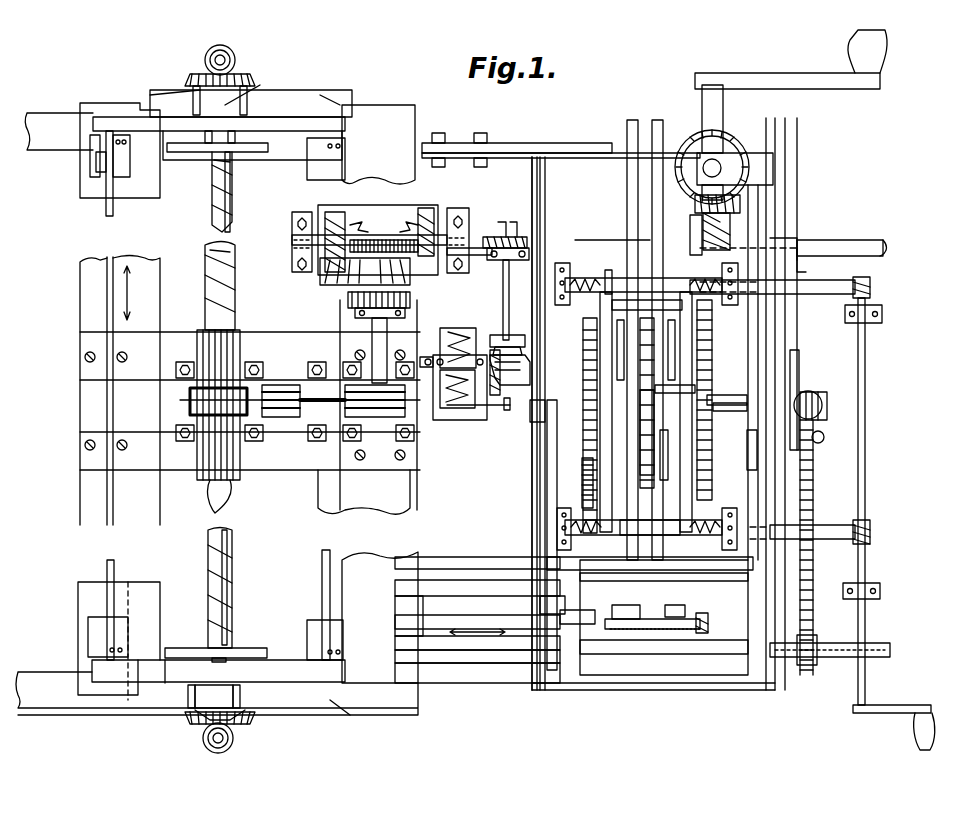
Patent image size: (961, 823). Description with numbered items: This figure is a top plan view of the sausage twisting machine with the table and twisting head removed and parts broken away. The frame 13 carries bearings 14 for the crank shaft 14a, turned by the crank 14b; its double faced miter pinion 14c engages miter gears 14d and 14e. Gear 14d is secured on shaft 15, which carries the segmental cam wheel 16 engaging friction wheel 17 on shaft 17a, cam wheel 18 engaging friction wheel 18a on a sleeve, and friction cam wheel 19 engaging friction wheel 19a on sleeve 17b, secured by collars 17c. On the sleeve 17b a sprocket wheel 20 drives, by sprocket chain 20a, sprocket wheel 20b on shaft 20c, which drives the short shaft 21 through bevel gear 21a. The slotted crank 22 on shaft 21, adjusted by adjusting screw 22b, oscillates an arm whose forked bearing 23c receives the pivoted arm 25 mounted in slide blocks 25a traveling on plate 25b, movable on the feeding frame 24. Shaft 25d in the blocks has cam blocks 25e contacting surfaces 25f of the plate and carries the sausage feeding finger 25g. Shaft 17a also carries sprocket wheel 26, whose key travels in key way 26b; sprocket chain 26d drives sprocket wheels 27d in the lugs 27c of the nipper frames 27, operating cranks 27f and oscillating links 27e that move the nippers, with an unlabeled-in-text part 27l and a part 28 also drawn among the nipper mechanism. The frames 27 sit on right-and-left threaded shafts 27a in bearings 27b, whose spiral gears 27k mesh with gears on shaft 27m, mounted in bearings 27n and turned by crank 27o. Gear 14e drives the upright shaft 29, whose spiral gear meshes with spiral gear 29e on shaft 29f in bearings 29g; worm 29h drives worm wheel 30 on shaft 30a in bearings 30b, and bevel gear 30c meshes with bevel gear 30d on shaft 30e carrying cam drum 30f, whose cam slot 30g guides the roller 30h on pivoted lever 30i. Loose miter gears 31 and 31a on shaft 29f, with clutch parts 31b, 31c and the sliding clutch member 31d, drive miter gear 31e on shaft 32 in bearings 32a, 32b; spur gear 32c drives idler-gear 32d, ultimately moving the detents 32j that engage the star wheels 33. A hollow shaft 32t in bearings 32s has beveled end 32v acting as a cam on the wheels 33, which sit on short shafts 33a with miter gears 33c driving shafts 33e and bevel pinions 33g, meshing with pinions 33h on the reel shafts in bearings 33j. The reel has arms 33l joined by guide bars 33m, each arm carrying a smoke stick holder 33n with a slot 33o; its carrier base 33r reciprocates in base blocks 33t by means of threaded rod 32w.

The frame 13 is at (768, 186).
The bearings 14 is at (722, 150).
The crank shaft 14a is at (712, 95).
The crank 14b is at (810, 75).
The double faced miter pinion 14c is at (742, 204).
The miter gear 14d is at (732, 228).
The miter gear 14e is at (735, 128).
The shaft 15 is at (790, 256).
The segmental cam wheel 16 is at (625, 176).
The friction wheel 17 is at (645, 478).
The shaft 17a is at (590, 460).
The sleeve 17b is at (765, 430).
The collars 17c is at (760, 432).
The cam wheel 18 is at (655, 185).
The friction wheel 18a is at (660, 385).
The friction cam wheel 19 is at (792, 150).
The friction wheel 19a is at (792, 392).
The sprocket wheel 20 is at (812, 399).
The sprocket chain 20a is at (813, 470).
The sprocket wheel 20b is at (812, 664).
The shaft 20c is at (875, 657).
The short shaft 21 is at (640, 610).
The bevel gear 21a is at (576, 615).
The slotted crank 22 is at (690, 630).
The adjusting screw 22b is at (708, 623).
The forked bearing 23c is at (686, 608).
The frame 24 is at (472, 567).
The pivoted arm 25 is at (597, 535).
The slide blocks 25a is at (520, 628).
The plate 25b is at (500, 582).
The shaft 25d is at (547, 448).
The cam blocks 25e is at (540, 625).
The surfaces 25f is at (395, 630).
The sausage feeding finger 25g is at (536, 422).
The sprocket wheel 26 is at (700, 400).
The key way 26b is at (728, 412).
The sprocket chain 26d is at (583, 365).
The nipper frame 27 is at (605, 290).
The shafts 27a is at (825, 293).
The bearings 27b is at (572, 268).
The lugs 27c is at (646, 412).
The sprocket wheels 27d is at (585, 335).
The oscillating links 27e is at (620, 535).
The cranks 27f is at (612, 312).
The spiral gears 27k is at (872, 285).
The rack guide 27l is at (617, 378).
The shaft 27m is at (866, 452).
The bearings 27n is at (883, 312).
The crank 27o is at (902, 712).
The slide bar 28 is at (662, 480).
The upright shaft 29 is at (720, 165).
The spiral gear 29e is at (695, 228).
The shaft 29f is at (598, 240).
The bearings 29g is at (458, 230).
The worm 29h is at (505, 232).
The worm wheel 30 is at (538, 230).
The shaft 30a is at (528, 275).
The bearings 30b is at (505, 335).
The bevel gear 30c is at (528, 352).
The bevel gear 30d is at (508, 372).
The shaft 30e is at (420, 362).
The cam drum 30f is at (468, 330).
The cam slot 30g is at (448, 343).
The roller or pin 30h is at (450, 405).
The pivoted lever 30i is at (500, 408).
The miter gear 31 is at (320, 215).
The miter gear 31a is at (428, 212).
The clutch 31b is at (405, 236).
The clutch portion 31c is at (300, 243).
The clutch member 31d is at (372, 228).
The miter gear 31e is at (325, 280).
The shaft 32 is at (372, 330).
The bearing 32a is at (348, 302).
The bearing 32b is at (385, 440).
The spur gear 32c is at (362, 385).
The idler-gear 32d is at (296, 450).
The detents or restrainers 32j is at (230, 175).
The bearings 32s is at (195, 372).
The hollow shaft 32t is at (240, 360).
The beveled end 32v is at (232, 490).
The threaded rod 32w is at (230, 560).
The star wheels 33 is at (200, 152).
The short shafts 33a is at (190, 92).
The miter gears 33c is at (187, 82).
The shafts 33e is at (233, 60).
The bevel pinions 33g is at (205, 57).
The pinions 33h is at (212, 748).
The bearings 33j is at (235, 108).
The arms 33l is at (217, 402).
The guide bars 33m is at (107, 292).
The smoke stick holder 33n is at (95, 150).
The slot 33o is at (100, 165).
The base 33r is at (312, 100).
The base blocks 33t is at (95, 110).